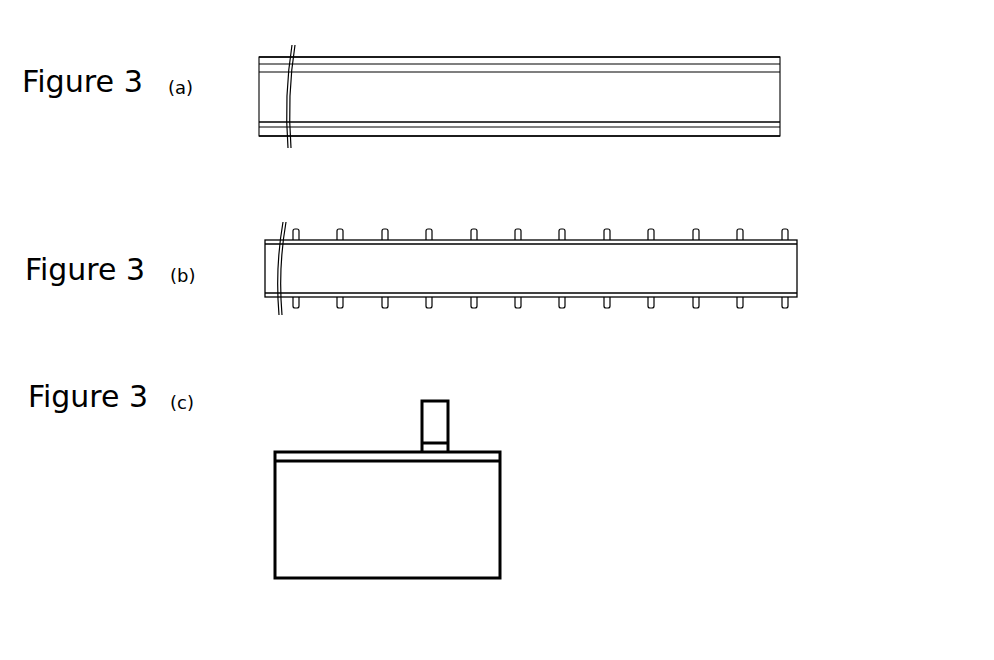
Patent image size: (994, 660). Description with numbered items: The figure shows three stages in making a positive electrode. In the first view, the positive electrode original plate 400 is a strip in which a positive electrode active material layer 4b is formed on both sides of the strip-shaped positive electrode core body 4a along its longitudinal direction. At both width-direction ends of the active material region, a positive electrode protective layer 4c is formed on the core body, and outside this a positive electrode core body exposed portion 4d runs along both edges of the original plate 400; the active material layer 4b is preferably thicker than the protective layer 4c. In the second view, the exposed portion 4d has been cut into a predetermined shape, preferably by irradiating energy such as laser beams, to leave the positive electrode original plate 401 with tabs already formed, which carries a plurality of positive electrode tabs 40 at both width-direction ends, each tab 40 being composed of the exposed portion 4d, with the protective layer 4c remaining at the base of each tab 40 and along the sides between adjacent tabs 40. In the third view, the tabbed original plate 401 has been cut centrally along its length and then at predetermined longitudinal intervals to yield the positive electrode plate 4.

In FIG. 3C, the positive electrode plate 4 is at (401, 488).
In FIG. 3A, the positive electrode core body 4a is at (519, 96).
In FIG. 3A, the positive electrode active material layer 4b is at (770, 98).
In FIG. 3B, the positive electrode active material layer 4b is at (780, 272).
In FIG. 3C, the positive electrode active material layer 4b is at (478, 521).
In FIG. 3A, the positive electrode protective layer 4c is at (782, 68).
In FIG. 3B, the positive electrode protective layer 4c is at (797, 240).
In FIG. 3C, the positive electrode protective layer 4c is at (502, 452).
In FIG. 3A, the positive electrode core body exposed portion 4d is at (782, 59).
In FIG. 3B, the positive electrode tab 40 is at (740, 229).
In FIG. 3C, the positive electrode tab 40 is at (435, 420).
In FIG. 3A, the positive electrode original plate 400 is at (489, 146).
In FIG. 3B, the positive electrode original plate with tabs already formed 401 is at (367, 235).